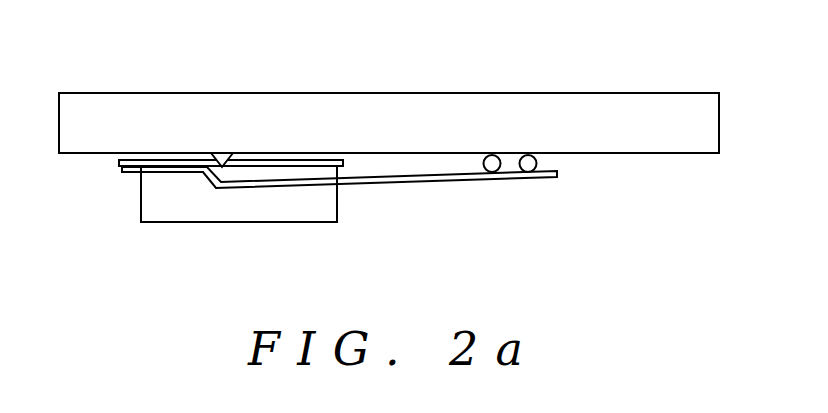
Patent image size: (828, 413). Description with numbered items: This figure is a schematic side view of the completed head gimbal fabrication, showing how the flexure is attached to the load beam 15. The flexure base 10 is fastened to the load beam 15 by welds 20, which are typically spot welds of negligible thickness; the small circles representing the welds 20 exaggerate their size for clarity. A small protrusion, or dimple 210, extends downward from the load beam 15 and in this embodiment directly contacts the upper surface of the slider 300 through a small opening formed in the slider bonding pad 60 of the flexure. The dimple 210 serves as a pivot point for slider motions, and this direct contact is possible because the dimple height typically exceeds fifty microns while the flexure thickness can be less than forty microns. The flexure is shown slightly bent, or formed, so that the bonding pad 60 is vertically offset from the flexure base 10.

The load beam 15 is at (690, 113).
The dimple 210 is at (222, 152).
The bonding pad 60 is at (126, 168).
The slider 300 is at (173, 212).
The flexure base 10 is at (382, 177).
The welds 20 is at (493, 172).